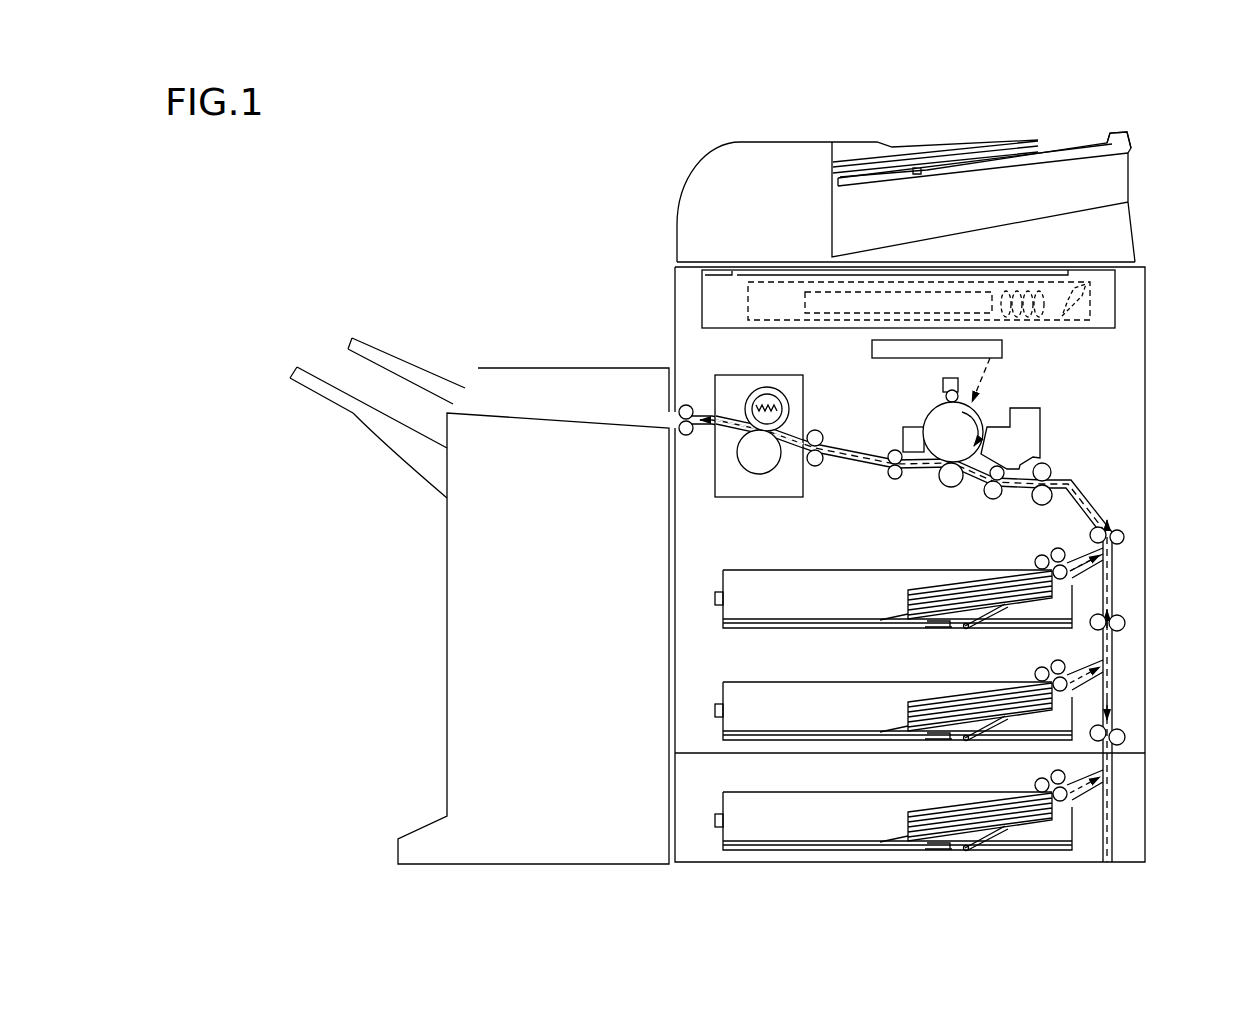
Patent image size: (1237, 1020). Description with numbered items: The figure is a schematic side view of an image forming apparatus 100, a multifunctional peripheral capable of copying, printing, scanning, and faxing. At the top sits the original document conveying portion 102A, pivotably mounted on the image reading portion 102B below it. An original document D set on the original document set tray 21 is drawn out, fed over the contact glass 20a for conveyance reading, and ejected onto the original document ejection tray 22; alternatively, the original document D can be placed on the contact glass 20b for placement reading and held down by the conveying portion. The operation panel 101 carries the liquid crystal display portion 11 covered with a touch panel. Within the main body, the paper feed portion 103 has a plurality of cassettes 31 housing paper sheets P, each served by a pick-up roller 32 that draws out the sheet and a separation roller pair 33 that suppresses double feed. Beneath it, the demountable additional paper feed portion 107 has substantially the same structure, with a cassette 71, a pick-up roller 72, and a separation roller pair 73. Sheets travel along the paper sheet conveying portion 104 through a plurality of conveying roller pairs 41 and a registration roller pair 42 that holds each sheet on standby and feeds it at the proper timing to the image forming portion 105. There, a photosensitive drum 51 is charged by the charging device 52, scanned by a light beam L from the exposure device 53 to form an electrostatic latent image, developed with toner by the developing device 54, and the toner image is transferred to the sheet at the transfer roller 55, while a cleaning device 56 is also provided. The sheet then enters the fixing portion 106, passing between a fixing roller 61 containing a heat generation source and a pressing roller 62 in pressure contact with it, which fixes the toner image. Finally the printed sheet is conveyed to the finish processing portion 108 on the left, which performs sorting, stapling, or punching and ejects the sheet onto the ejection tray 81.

The image forming apparatus 100 is at (675, 283).
The operation panel 101 is at (1092, 301).
The original document conveying portion 102A is at (878, 174).
The image reading portion 102B is at (904, 298).
The paper feed portion 103 is at (854, 684).
The paper sheet conveying portion 104 is at (949, 610).
The image forming portion 105 is at (996, 442).
The fixing portion 106 is at (745, 448).
The additional paper feed portion 107 is at (875, 801).
The finish processing portion 108 is at (479, 590).
The liquid crystal display portion 11 is at (832, 307).
The contact glass for conveyance reading 20a is at (718, 272).
The contact glass for placement reading 20b is at (788, 272).
The original document set tray 21 is at (1118, 133).
The original document ejection tray 22 is at (970, 225).
The cassette 31 is at (818, 570).
The pick-up roller 32 is at (1035, 562).
The separation roller pair 33 is at (1053, 553).
The conveying roller pair 41 is at (690, 405).
The registration roller pair 42 is at (990, 498).
The photosensitive drum 51 is at (935, 420).
The charging device 52 is at (943, 385).
The exposure device 53 is at (1003, 349).
The developing device 54 is at (1027, 410).
The transfer roller 55 is at (946, 488).
The cleaning device 56 is at (903, 438).
The fixing roller 61 is at (766, 388).
The pressing roller 62 is at (760, 462).
The cassette 71 is at (818, 792).
The pick-up roller 72 is at (1035, 785).
The separation roller pair 73 is at (1067, 797).
The ejection tray 81 is at (308, 362).
The original document D is at (1027, 140).
The paper sheet P is at (910, 587).
The light beam L is at (982, 387).